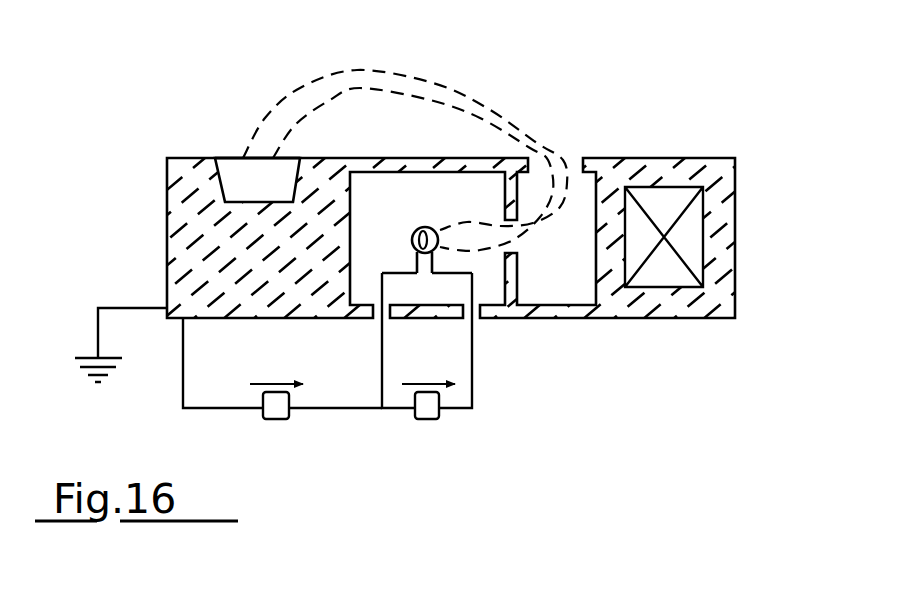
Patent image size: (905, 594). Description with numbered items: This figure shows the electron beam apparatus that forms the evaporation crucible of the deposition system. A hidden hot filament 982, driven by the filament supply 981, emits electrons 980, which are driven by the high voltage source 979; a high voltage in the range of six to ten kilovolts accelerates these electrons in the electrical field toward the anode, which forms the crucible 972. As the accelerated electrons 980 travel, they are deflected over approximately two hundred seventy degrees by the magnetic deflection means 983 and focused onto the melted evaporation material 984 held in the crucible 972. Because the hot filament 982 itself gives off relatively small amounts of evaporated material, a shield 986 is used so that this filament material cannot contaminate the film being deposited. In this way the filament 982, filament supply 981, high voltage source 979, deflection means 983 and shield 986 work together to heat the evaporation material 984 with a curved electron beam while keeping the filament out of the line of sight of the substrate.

The crucible 972 is at (220, 173).
The high voltage source 979 is at (270, 422).
The electrons 980 is at (433, 85).
The filament supply 981 is at (438, 420).
The hot filament 982 is at (417, 228).
The magnetic deflection means 983 is at (690, 253).
The melted evaporation material 984 is at (227, 158).
The shield 986 is at (190, 240).